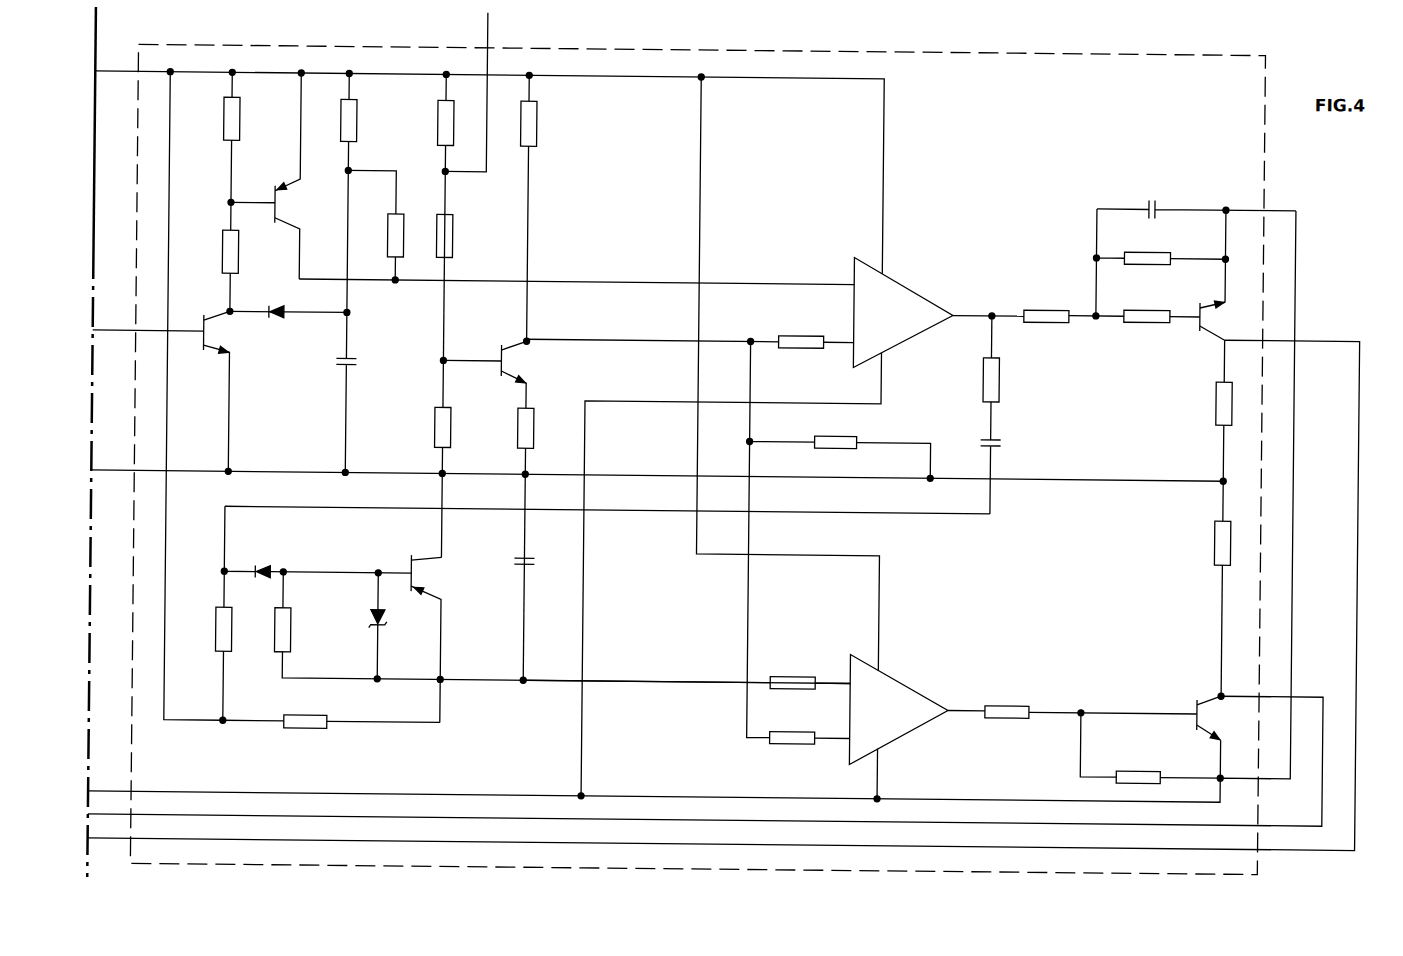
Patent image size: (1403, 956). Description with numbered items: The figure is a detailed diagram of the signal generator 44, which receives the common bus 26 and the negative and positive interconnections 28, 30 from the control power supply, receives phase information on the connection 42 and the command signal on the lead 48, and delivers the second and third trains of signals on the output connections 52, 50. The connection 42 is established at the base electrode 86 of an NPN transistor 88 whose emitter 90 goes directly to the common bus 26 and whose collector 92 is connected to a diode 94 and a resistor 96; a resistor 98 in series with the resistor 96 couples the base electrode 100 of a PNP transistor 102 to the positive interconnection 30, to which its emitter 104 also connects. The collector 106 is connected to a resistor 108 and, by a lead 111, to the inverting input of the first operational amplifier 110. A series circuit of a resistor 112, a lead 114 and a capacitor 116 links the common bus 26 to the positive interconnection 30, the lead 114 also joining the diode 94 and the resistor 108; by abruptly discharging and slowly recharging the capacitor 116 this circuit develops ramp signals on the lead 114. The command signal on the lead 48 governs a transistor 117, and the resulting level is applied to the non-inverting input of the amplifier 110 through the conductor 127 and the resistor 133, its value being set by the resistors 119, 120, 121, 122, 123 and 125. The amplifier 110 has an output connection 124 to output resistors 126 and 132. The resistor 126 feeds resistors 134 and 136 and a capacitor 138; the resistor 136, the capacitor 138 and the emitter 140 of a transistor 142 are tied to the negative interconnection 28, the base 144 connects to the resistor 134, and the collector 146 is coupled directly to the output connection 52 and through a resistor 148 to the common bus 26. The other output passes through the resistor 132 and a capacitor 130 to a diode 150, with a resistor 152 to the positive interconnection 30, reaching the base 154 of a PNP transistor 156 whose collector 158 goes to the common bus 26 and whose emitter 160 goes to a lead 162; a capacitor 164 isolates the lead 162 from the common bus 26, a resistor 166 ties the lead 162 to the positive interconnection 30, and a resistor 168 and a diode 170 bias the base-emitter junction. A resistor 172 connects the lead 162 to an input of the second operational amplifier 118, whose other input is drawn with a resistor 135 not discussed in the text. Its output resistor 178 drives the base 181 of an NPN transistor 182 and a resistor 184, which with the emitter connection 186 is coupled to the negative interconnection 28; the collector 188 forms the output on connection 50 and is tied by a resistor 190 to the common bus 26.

The common bus 26 is at (122, 471).
The negative interconnection 28 is at (1300, 250).
The positive interconnection 30 is at (124, 72).
The connection 42 is at (122, 329).
The signal generator 44 is at (982, 45).
The lead 48 is at (484, 30).
The output connection 50 is at (1326, 686).
The output connection 52 is at (1344, 338).
The base electrode 86 is at (224, 378).
The transistor 88 is at (220, 330).
The emitter 90 is at (228, 346).
The collector 92 is at (214, 311).
The diode 94 is at (278, 310).
The resistor 96 is at (221, 253).
The resistor 98 is at (221, 118).
The base electrode 100 is at (272, 212).
The transistor 102 is at (280, 175).
The emitter 104 is at (288, 186).
The collector 106 is at (302, 218).
The resistor 108 is at (388, 228).
The first operational amplifier 110 is at (912, 280).
The lead 111 is at (812, 276).
The resistor 112 is at (348, 107).
The lead 114 is at (346, 298).
The capacitor 116 is at (336, 364).
The transistor 117 is at (526, 356).
The second operational amplifier 118 is at (912, 674).
The resistor 119 is at (832, 430).
The resistor 120 is at (433, 122).
The resistor 121 is at (444, 226).
The resistor 122 is at (435, 426).
The resistor 123 is at (534, 106).
The output connection 124 is at (986, 336).
The resistor 125 is at (518, 430).
The output resistor 126 is at (1034, 306).
The conductor 127 is at (634, 336).
The capacitor 130 is at (980, 432).
The resistor 132 is at (982, 380).
The resistor 133 is at (800, 330).
The resistor 134 is at (1141, 300).
The resistor 135 is at (786, 740).
The resistor 136 is at (1160, 244).
The capacitor 138 is at (1152, 194).
The emitter 140 is at (1214, 294).
The transistor 142 is at (1200, 293).
The base 144 is at (1186, 324).
The collector 146 is at (1186, 338).
The resistor 148 is at (1216, 398).
The diode 150 is at (264, 564).
The resistor 152 is at (218, 636).
The base 154 is at (406, 570).
The transistor 156 is at (418, 618).
The collector 158 is at (430, 554).
The emitter 160 is at (440, 592).
The lead 162 is at (530, 674).
The capacitor 164 is at (538, 560).
The resistor 166 is at (306, 716).
The resistor 168 is at (294, 634).
The diode 170 is at (376, 618).
The resistor 172 is at (794, 668).
The output resistor 178 is at (1010, 692).
The base 181 is at (1190, 700).
The transistor 182 is at (1198, 713).
The resistor 184 is at (1134, 762).
The emitter connection 186 is at (1206, 732).
The collector 188 is at (1214, 678).
The resistor 190 is at (1208, 530).